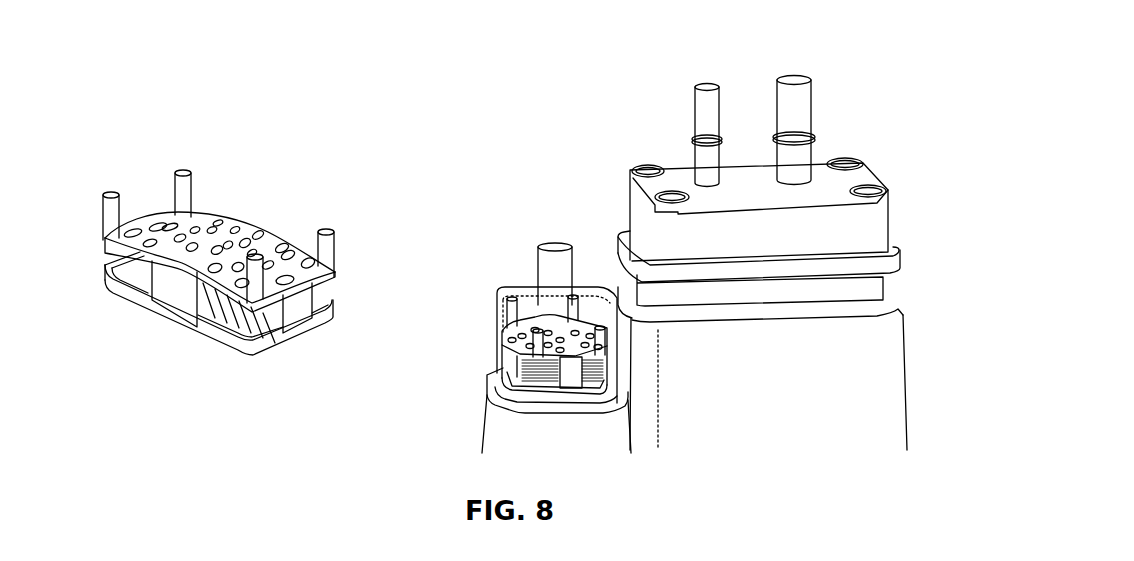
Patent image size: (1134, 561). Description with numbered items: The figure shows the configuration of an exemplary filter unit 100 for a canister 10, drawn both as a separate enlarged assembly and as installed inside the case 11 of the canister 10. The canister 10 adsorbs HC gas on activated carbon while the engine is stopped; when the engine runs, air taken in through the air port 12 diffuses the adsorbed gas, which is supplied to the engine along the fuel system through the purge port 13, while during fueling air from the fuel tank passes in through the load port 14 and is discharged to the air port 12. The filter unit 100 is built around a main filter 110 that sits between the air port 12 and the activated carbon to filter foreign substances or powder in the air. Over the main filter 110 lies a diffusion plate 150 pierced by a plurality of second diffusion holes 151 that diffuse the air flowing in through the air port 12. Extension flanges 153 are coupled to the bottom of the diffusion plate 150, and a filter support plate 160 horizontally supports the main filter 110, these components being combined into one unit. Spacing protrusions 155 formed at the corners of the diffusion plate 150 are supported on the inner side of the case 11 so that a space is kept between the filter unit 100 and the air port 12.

The canister 10 is at (650, 248).
The case 11 is at (634, 282).
The air port 12 is at (547, 265).
The purge port 13 is at (698, 117).
The load port 14 is at (782, 93).
The filter unit 100 is at (355, 252).
The main filter 110 is at (238, 330).
The diffusion plate 150 is at (270, 237).
The second diffusion holes 151 is at (230, 250).
The extension flanges 153 is at (173, 308).
The spacing protrusions 155 is at (178, 193).
The filter support plate 160 is at (278, 346).